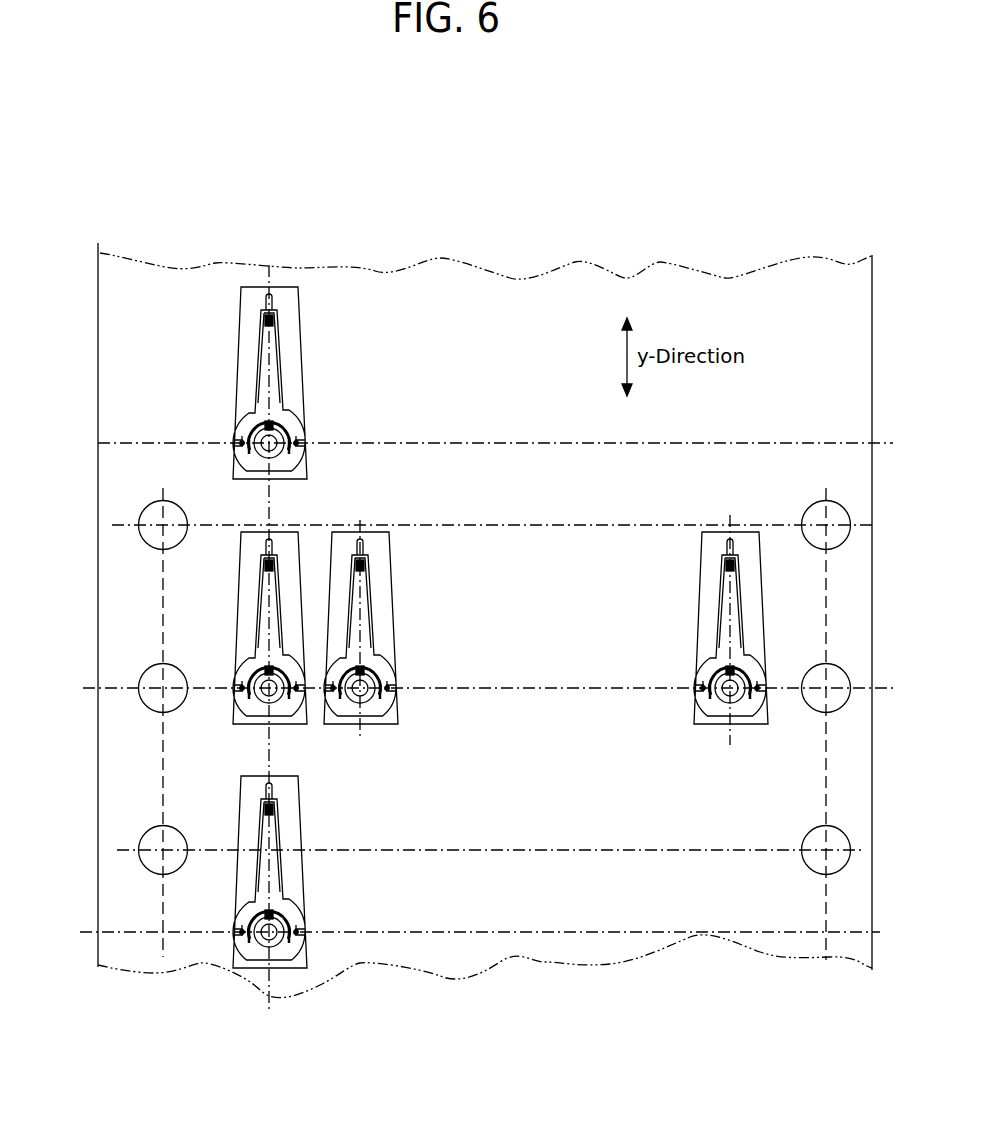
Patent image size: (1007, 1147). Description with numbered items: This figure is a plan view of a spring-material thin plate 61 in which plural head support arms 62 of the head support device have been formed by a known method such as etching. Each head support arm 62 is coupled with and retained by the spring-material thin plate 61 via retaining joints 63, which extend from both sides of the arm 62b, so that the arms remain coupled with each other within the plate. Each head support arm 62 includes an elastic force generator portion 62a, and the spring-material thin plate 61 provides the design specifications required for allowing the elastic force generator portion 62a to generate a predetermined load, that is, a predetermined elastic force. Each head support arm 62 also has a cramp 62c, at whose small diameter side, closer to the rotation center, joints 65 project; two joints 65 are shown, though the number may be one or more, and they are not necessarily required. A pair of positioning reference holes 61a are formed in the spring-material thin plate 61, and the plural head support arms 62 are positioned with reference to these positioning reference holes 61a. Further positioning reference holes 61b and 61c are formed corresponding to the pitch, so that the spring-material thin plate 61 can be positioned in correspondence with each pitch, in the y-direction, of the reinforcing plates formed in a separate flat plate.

The spring-material thin plate 61 is at (497, 310).
The positioning reference holes 61a is at (150, 677).
The positioning reference hole 61b is at (818, 508).
The positioning reference hole 61c is at (152, 858).
The head support arm 62 is at (263, 368).
The elastic force generator portion 62a is at (284, 945).
The arm 62b is at (309, 936).
The cramp 62c is at (272, 948).
The retaining joints 63 is at (240, 441).
The joints 65 is at (271, 420).